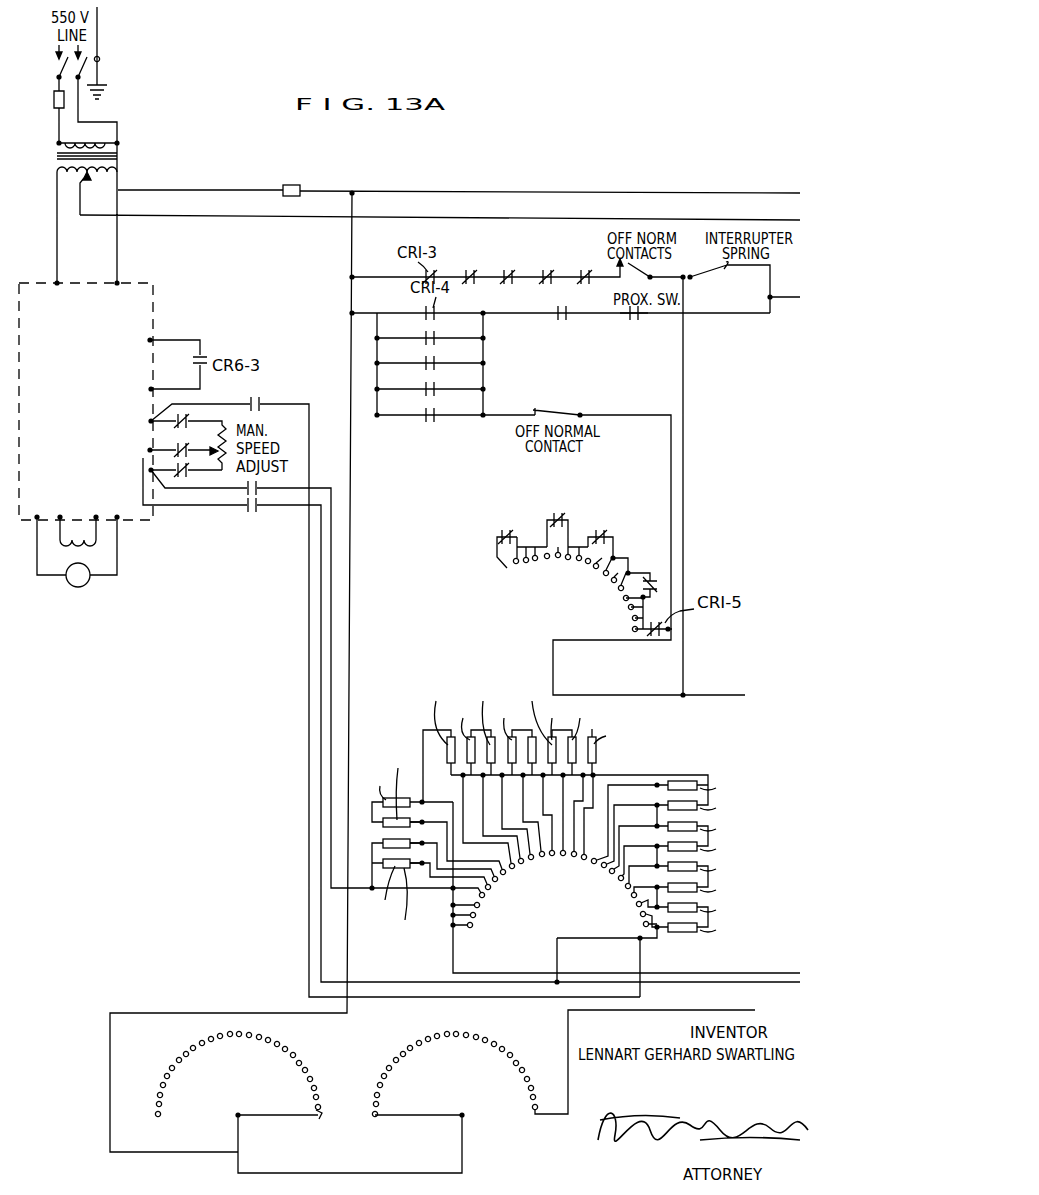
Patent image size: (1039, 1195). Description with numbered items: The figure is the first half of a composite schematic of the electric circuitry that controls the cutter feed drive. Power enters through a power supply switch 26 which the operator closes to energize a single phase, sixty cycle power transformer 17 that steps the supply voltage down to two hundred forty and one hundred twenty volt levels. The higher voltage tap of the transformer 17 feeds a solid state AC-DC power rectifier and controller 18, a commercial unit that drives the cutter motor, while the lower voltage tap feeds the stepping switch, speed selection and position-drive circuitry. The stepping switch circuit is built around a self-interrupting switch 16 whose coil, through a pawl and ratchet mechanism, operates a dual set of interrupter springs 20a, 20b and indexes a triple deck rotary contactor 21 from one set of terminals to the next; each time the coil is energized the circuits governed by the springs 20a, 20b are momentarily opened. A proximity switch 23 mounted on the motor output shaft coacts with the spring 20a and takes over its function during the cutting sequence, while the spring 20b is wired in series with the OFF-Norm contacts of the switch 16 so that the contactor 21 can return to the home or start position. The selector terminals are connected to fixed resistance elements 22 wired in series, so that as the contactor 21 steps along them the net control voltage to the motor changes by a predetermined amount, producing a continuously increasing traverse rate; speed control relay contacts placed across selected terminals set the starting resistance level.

The power supply switch 26 is at (56, 66).
The power transformer 17 is at (52, 137).
The solid state AC-DC power rectifier and controller 18 is at (18, 545).
The self-interrupting switch 16 is at (710, 278).
The proximity switch 23 is at (636, 328).
The interrupter spring 20a is at (560, 410).
The interrupter spring 20b is at (614, 288).
The fixed resistance elements 22 is at (607, 735).
The triple deck rotary contactor 21 is at (575, 639).